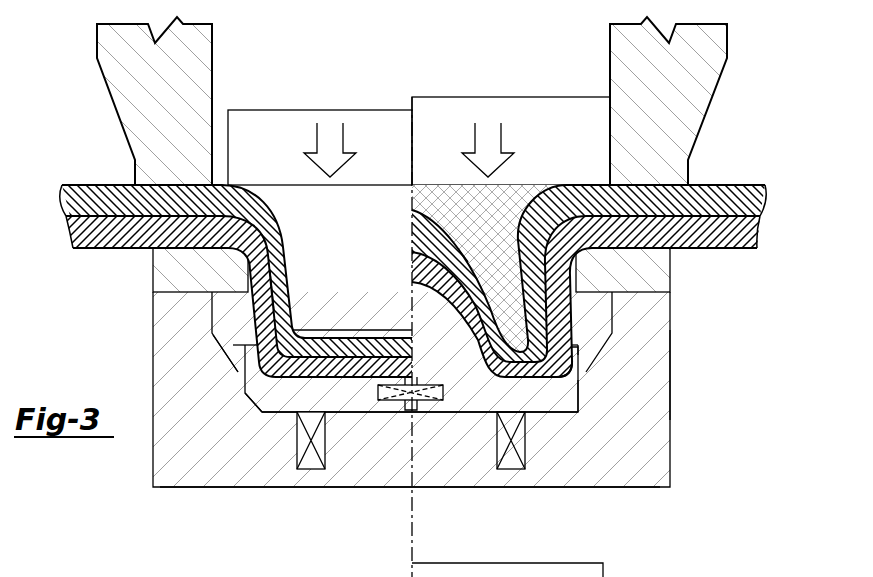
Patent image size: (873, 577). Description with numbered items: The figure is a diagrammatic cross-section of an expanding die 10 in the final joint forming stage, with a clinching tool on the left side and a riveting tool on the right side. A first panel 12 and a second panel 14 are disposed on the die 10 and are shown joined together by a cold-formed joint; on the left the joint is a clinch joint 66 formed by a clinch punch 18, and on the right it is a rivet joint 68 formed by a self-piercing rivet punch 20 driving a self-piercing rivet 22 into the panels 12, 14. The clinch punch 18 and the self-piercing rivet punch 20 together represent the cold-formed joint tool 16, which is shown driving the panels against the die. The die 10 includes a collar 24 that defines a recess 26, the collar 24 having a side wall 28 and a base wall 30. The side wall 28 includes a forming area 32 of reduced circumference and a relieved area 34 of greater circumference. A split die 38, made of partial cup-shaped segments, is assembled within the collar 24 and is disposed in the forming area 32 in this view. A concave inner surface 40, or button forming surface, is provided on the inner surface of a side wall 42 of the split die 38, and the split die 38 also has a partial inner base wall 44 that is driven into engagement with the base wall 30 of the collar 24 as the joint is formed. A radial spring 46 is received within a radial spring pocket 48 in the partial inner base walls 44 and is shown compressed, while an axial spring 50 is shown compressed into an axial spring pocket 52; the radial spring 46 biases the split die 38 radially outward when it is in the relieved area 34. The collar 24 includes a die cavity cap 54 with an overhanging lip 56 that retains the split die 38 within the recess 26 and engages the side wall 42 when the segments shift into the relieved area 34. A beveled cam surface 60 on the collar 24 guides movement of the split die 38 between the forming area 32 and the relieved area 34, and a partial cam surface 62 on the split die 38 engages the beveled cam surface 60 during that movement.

The expanding die 10 is at (146, 507).
The first panel 12 is at (87, 193).
The second panel 14 is at (74, 252).
The cold-formed joint tool 16 is at (439, 76).
The clinch punch 18 is at (274, 165).
The self-piercing rivet punch 20 is at (564, 155).
The self-piercing rivet 22 is at (428, 198).
The collar 24 is at (674, 430).
The recess 26 is at (597, 308).
The side wall 28 is at (648, 345).
The base wall 30 is at (362, 475).
The forming area 32 is at (243, 410).
The relieved area 34 is at (213, 307).
The split die 38 is at (473, 416).
The concave inner surface 40 is at (560, 347).
The side wall 42 is at (572, 355).
The partial inner base wall 44 is at (314, 405).
The radial spring 46 is at (406, 378).
The radial spring pocket 48 is at (382, 386).
The axial spring 50 is at (522, 445).
The axial spring pocket 52 is at (503, 446).
The die cavity cap 54 is at (206, 283).
The overhanging lip 56 is at (268, 278).
The beveled cam surface 60 is at (229, 353).
The partial cam surface 62 is at (233, 352).
The clinch joint 66 is at (293, 330).
The rivet joint 68 is at (566, 370).